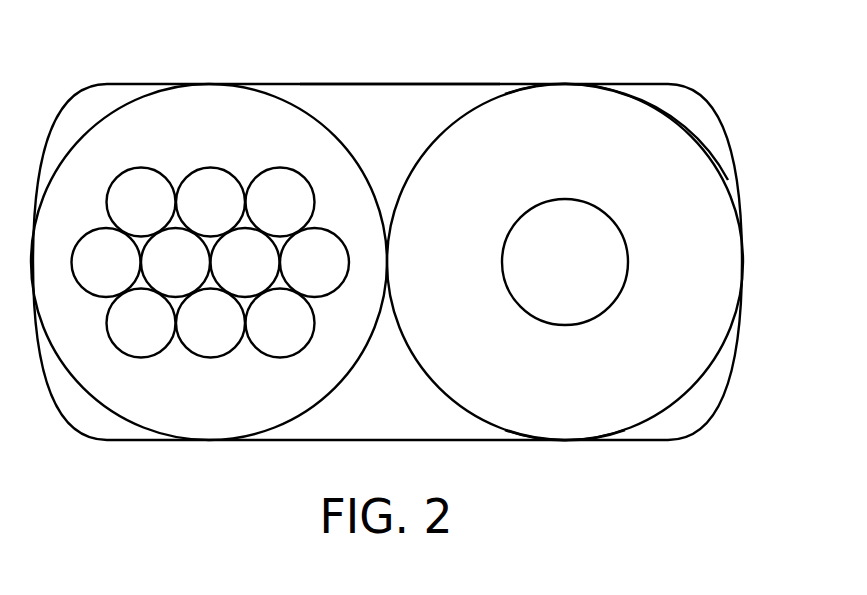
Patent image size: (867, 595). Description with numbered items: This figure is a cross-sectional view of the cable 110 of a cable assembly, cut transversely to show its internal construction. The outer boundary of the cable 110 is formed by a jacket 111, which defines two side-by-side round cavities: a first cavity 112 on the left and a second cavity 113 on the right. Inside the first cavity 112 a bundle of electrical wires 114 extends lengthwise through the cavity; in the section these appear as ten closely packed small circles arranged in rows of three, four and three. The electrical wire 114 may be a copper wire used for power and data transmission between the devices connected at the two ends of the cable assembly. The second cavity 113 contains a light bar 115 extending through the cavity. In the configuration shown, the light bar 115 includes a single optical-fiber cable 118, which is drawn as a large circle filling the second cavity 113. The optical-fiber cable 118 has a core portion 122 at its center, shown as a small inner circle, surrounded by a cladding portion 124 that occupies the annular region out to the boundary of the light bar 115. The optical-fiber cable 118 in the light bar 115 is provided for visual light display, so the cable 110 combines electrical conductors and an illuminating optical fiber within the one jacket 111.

The cable 110 is at (462, 90).
The jacket 111 is at (389, 97).
The first cavity 112 is at (140, 118).
The second cavity 113 is at (563, 95).
The electrical wire 114 is at (208, 195).
The light bar 115 is at (565, 425).
The optical-fiber cable 118 is at (665, 141).
The core portion 122 is at (545, 278).
The cladding portion 124 is at (683, 278).